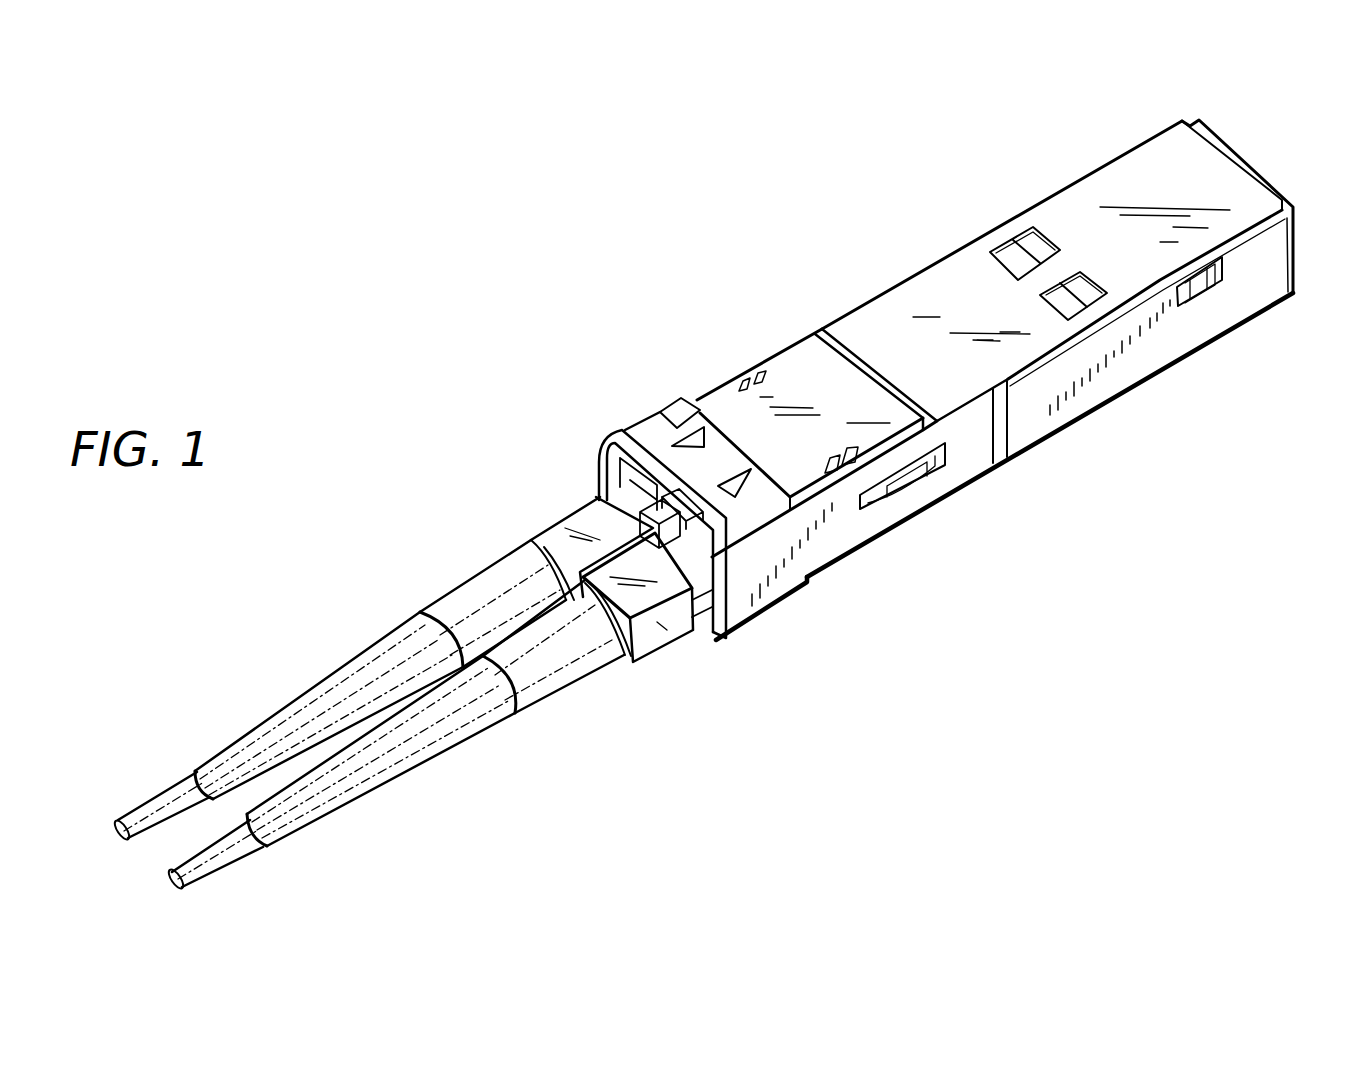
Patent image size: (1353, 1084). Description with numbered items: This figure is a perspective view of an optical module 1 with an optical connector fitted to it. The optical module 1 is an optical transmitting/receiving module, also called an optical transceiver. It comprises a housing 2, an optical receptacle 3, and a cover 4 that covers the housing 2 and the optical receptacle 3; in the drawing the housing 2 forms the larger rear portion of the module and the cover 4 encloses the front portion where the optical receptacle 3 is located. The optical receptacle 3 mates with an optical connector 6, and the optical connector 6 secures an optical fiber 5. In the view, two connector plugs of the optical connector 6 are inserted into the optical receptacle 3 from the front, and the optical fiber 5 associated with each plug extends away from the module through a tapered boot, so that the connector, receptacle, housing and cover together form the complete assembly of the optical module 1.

The optical module 1 is at (456, 198).
The housing 2 is at (1087, 188).
The optical receptacle 3 is at (605, 465).
The cover 4 is at (853, 537).
The optical fiber 5 is at (155, 806).
The optical connector 6 is at (567, 533).